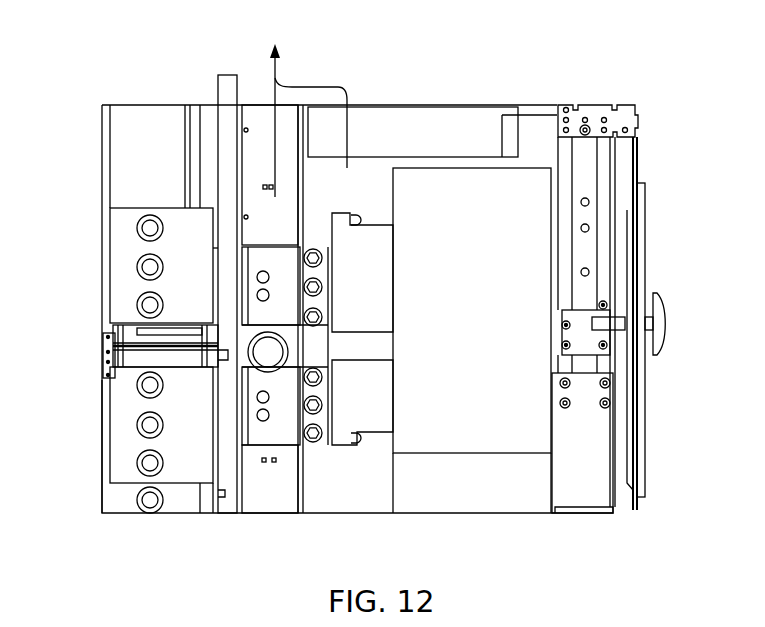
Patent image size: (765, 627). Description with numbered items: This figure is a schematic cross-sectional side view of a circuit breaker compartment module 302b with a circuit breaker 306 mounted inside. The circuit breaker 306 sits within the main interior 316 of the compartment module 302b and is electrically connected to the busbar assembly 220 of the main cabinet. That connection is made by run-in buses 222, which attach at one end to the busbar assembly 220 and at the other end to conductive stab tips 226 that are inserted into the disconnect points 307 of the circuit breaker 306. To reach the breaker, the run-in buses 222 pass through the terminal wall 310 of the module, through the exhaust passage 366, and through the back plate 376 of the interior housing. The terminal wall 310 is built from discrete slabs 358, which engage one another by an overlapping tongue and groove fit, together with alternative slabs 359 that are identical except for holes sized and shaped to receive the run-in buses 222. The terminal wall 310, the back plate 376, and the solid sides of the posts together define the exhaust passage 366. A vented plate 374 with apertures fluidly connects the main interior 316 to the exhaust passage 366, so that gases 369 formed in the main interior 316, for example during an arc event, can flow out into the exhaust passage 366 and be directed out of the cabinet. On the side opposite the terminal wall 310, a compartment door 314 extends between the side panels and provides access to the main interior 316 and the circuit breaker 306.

The busbar assembly 220 is at (128, 123).
The run-in buses 222 is at (125, 223).
The conductive stab tips 226 is at (328, 317).
The circuit breaker compartment module 302b is at (663, 90).
The circuit breaker 306 is at (492, 345).
The disconnect points 307 is at (378, 293).
The terminal wall 310 is at (225, 72).
The compartment door 314 is at (640, 165).
The main interior 316 is at (433, 496).
The slabs 358 is at (232, 128).
The alternative slabs 359 is at (227, 317).
The exhaust passage 366 is at (287, 225).
The gases 369 is at (317, 120).
The vented plate 374 is at (390, 115).
The back plate 376 is at (297, 480).